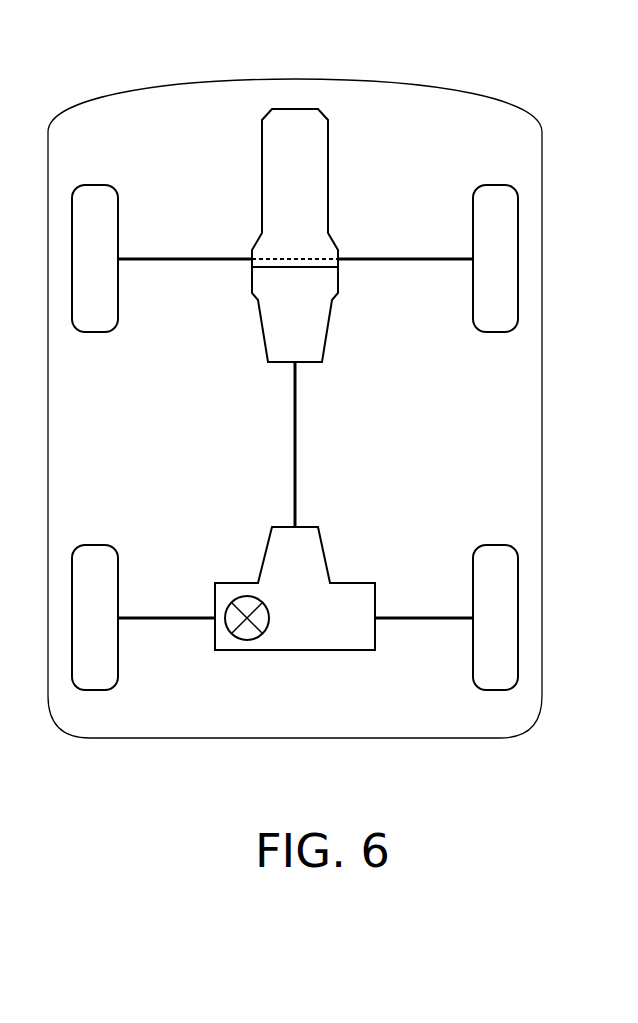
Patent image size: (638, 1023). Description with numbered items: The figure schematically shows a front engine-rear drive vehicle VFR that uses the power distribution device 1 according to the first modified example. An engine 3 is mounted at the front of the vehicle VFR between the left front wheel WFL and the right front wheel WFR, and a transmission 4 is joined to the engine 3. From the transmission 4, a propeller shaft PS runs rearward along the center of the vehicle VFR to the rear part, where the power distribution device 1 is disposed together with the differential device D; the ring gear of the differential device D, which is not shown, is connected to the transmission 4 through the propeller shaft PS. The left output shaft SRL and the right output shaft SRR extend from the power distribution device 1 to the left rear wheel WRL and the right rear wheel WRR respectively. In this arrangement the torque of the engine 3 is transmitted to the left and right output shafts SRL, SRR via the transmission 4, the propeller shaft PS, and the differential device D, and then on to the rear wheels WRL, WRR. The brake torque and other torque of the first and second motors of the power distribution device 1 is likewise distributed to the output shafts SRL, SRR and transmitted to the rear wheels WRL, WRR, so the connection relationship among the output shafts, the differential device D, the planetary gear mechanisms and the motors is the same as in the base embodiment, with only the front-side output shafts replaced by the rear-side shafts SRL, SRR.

The FR vehicle VFR is at (293, 78).
The left front wheel WFL is at (95, 198).
The right front wheel WFR is at (495, 198).
The left rear wheel WRL is at (96, 556).
The right rear wheel WRR is at (495, 556).
The engine 3 is at (313, 157).
The transmission 4 is at (313, 330).
The propeller shaft PS is at (296, 443).
The power distribution device 1 is at (312, 547).
The differential device D is at (238, 647).
The left output shaft SRL is at (158, 614).
The right output shaft SRR is at (420, 614).